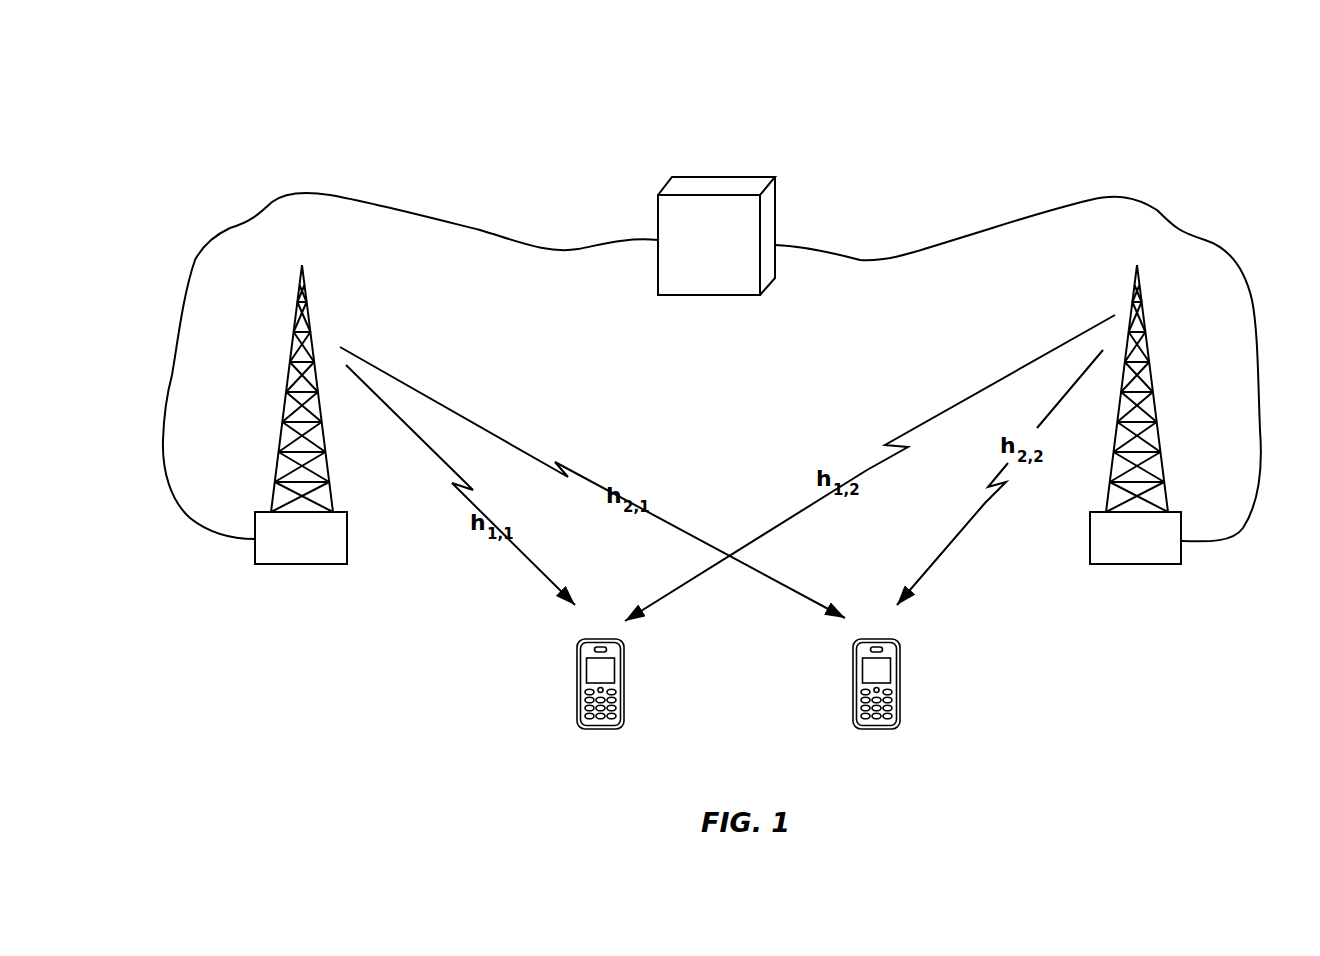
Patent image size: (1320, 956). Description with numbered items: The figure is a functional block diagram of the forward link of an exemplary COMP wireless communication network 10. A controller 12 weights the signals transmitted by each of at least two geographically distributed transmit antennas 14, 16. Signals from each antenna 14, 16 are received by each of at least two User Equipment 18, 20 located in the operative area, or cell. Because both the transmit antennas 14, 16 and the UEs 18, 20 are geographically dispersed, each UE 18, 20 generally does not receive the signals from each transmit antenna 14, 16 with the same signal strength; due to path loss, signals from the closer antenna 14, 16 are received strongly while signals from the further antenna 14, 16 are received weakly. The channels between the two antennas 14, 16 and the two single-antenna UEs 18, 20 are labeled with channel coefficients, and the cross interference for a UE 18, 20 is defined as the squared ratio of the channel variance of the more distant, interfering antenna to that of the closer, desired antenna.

The COMP wireless communication network 10 is at (1000, 120).
The controller 12 is at (740, 177).
The transmit antenna 14 is at (281, 431).
The transmit antenna 16 is at (1157, 432).
The User Equipment 18 is at (598, 730).
The User Equipment 20 is at (878, 730).